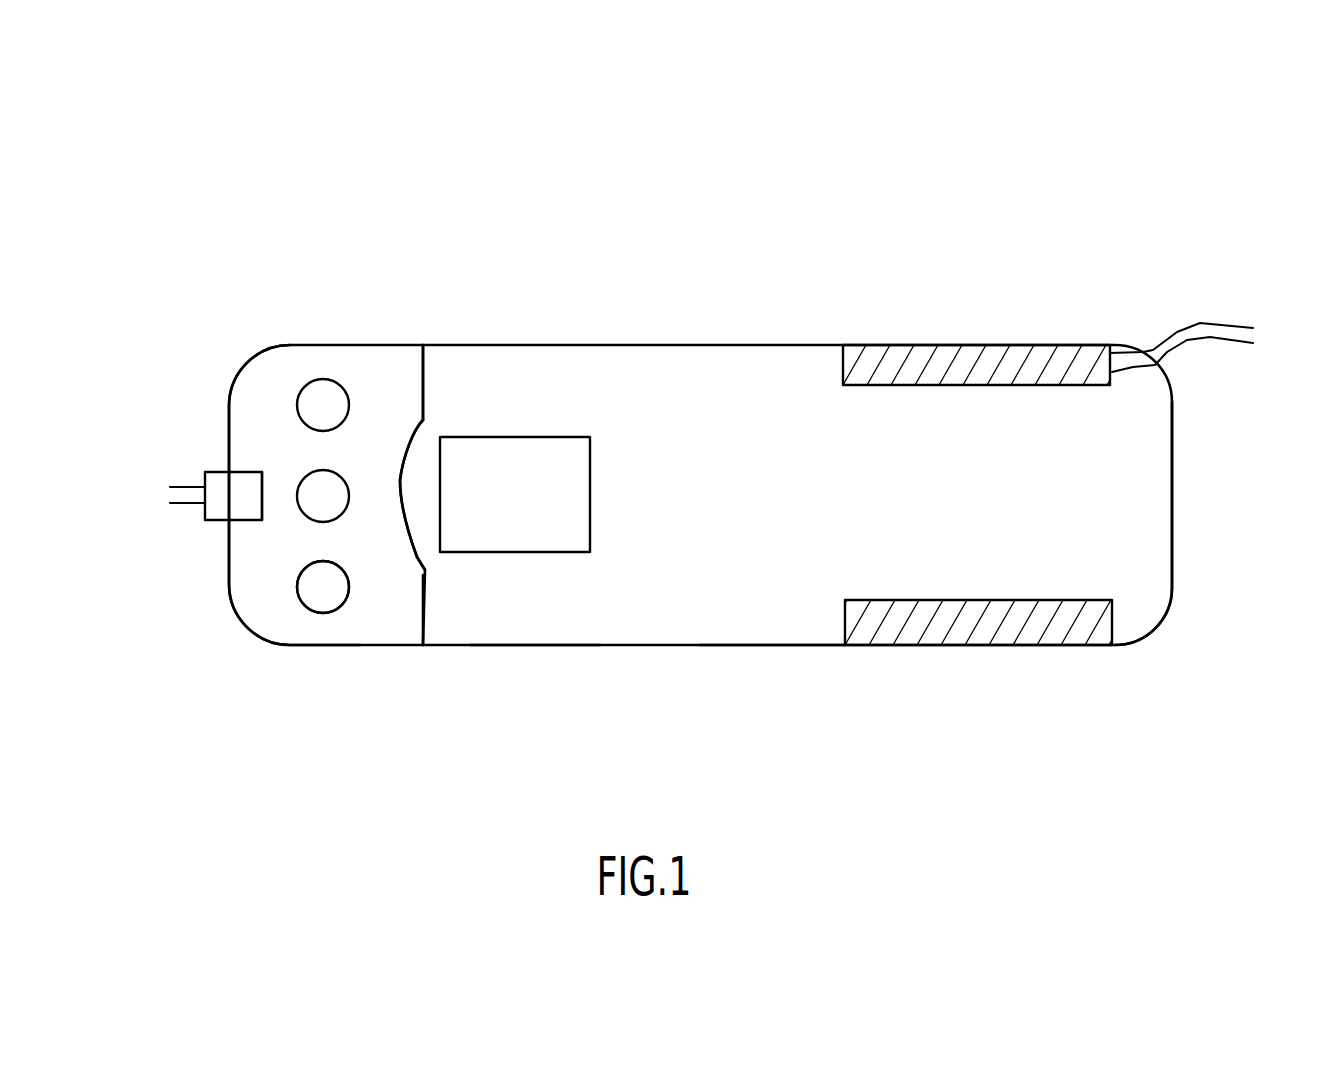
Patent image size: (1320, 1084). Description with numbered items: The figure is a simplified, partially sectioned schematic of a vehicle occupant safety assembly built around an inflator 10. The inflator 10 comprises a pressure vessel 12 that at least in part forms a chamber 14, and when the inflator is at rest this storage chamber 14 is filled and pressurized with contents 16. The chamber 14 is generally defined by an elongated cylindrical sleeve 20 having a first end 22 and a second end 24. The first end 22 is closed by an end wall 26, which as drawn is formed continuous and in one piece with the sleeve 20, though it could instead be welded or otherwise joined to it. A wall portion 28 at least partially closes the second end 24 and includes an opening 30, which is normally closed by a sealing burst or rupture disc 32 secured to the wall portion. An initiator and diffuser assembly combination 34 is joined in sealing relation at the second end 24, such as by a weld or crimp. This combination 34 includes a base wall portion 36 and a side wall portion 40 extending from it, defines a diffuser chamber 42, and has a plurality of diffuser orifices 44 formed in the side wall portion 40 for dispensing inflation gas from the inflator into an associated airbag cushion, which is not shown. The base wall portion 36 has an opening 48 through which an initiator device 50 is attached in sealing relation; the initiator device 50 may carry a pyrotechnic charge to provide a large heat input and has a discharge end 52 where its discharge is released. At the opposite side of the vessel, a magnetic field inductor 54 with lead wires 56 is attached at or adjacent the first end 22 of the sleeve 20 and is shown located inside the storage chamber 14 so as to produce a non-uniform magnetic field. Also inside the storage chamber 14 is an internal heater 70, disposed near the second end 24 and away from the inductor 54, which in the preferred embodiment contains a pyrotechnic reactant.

The inflator 10 is at (704, 463).
The pressure vessel 12 is at (700, 432).
The chamber 14 is at (535, 711).
The contents 16 is at (601, 669).
The elongated cylindrical sleeve 20 is at (771, 708).
The first end 22 is at (1143, 695).
The second end 24 is at (420, 576).
The end wall 26 is at (1242, 495).
The wall portion 28 is at (380, 659).
The opening 30 is at (471, 427).
The burst or rupture disc 32 is at (390, 373).
The initiator and diffuser assembly combination 34 is at (247, 308).
The base wall portion 36 is at (174, 476).
The side wall portion 40 is at (294, 693).
The diffuser chamber 42 is at (259, 452).
The diffuser orifices 44 is at (278, 639).
The opening 48 is at (161, 460).
The initiator device 50 is at (188, 539).
The discharge end 52 is at (229, 584).
The magnetic field inductor 54 is at (977, 424).
The lead wires 56 is at (1181, 282).
The internal heater 70 is at (526, 507).